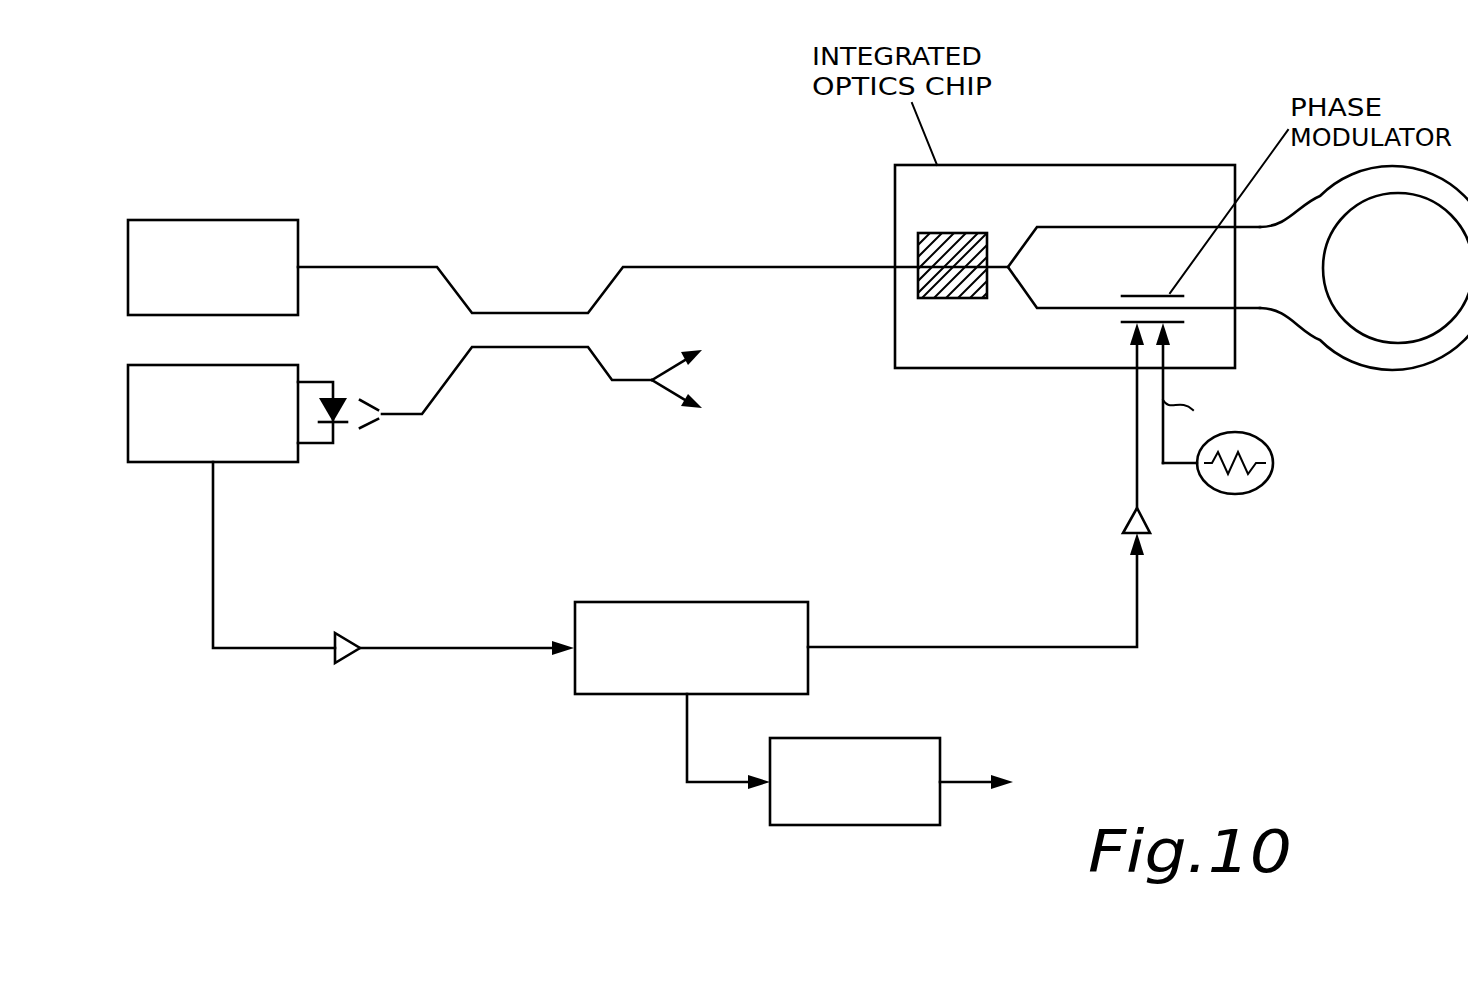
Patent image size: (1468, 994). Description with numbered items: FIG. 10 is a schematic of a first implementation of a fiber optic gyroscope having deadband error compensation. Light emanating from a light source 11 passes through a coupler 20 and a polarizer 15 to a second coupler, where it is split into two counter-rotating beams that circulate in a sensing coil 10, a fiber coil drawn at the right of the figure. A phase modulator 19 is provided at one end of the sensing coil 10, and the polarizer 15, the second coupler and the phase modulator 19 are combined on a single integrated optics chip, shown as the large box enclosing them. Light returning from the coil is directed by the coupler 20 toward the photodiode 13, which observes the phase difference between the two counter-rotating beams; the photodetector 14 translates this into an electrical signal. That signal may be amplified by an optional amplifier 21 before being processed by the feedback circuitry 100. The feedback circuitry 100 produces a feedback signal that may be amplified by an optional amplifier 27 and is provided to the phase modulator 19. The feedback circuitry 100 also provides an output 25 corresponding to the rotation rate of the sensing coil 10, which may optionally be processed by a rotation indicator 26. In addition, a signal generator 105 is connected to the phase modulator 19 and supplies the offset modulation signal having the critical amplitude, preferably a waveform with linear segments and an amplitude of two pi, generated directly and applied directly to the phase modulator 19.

The sensing coil 10 is at (1415, 244).
The light source 11 is at (217, 219).
The photodiode 13 is at (337, 400).
The photodetector 14 is at (253, 365).
The polarizer 15 is at (952, 299).
The phase modulator 19 is at (1122, 296).
The fiber coupler 20 is at (521, 287).
The amplifier 21 is at (360, 634).
The output 25 is at (686, 766).
The rotation indicator 26 is at (837, 826).
The amplifier 27 is at (1122, 521).
The feedback circuitry 100 is at (687, 601).
The signal generator 105 is at (1273, 463).